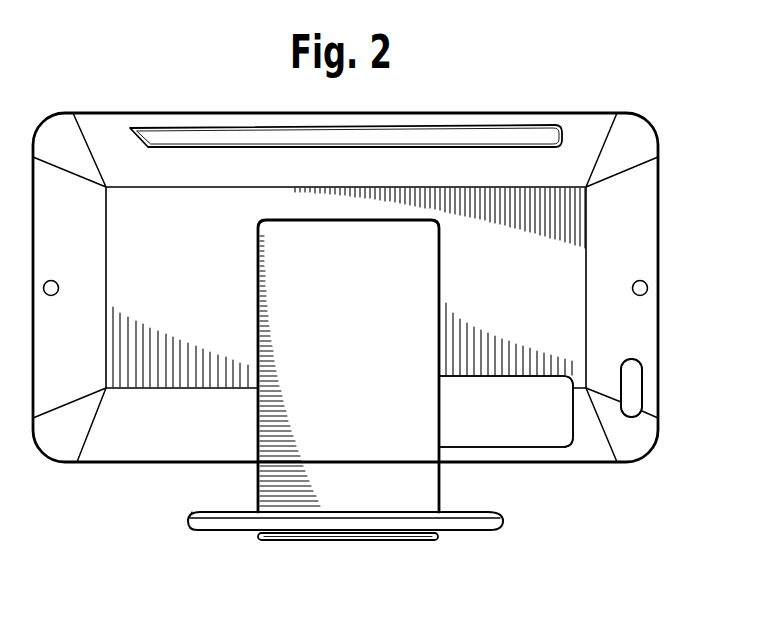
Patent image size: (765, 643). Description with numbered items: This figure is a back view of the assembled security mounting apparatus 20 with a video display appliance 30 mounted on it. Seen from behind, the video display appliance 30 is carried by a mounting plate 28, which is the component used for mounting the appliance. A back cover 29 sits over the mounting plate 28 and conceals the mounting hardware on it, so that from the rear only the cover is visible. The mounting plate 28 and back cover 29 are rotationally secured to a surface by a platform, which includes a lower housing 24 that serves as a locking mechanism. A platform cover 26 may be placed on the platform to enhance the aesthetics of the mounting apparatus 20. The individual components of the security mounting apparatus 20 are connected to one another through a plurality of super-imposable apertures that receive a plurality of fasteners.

The security mounting apparatus 20 is at (468, 170).
The lower housing 24 is at (274, 542).
The platform cover 26 is at (221, 512).
The mounting plate 28 is at (497, 497).
The back cover 29 is at (422, 453).
The video display appliance 30 is at (108, 127).